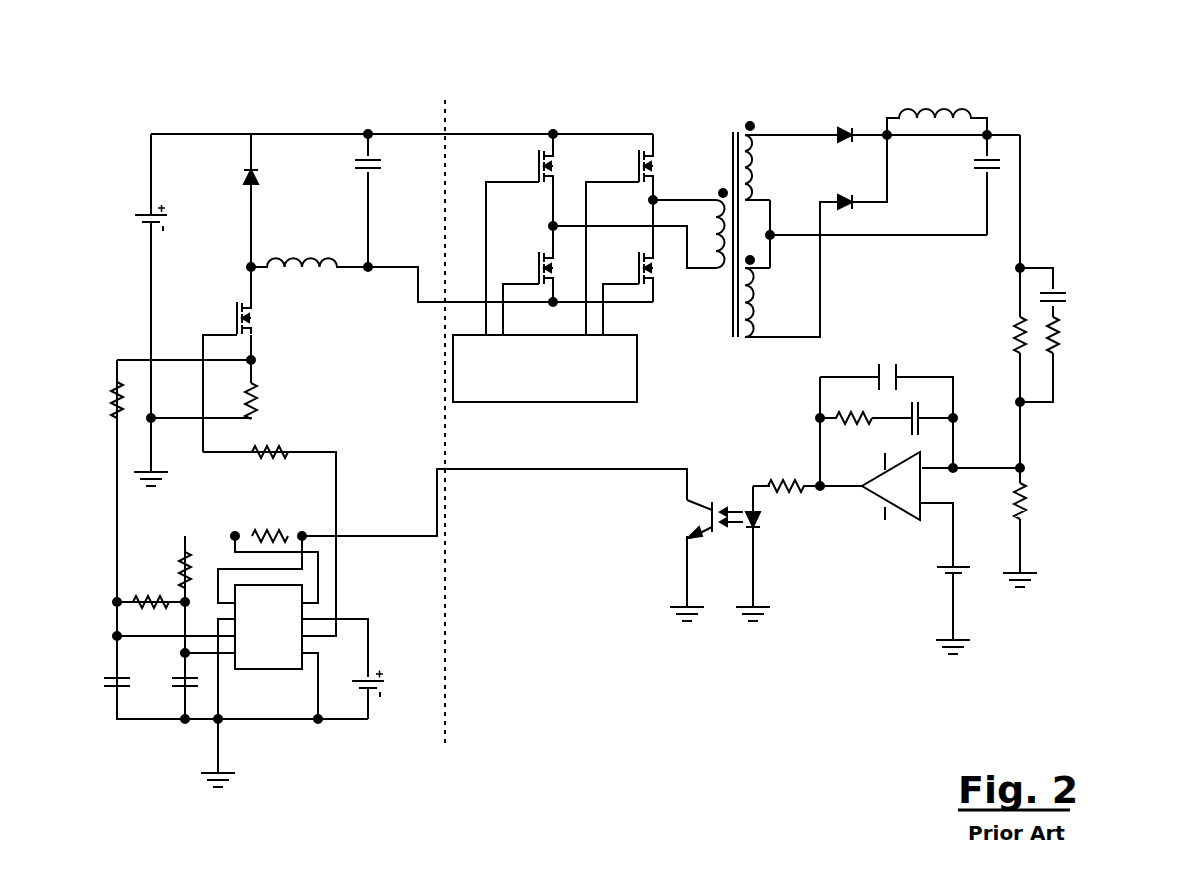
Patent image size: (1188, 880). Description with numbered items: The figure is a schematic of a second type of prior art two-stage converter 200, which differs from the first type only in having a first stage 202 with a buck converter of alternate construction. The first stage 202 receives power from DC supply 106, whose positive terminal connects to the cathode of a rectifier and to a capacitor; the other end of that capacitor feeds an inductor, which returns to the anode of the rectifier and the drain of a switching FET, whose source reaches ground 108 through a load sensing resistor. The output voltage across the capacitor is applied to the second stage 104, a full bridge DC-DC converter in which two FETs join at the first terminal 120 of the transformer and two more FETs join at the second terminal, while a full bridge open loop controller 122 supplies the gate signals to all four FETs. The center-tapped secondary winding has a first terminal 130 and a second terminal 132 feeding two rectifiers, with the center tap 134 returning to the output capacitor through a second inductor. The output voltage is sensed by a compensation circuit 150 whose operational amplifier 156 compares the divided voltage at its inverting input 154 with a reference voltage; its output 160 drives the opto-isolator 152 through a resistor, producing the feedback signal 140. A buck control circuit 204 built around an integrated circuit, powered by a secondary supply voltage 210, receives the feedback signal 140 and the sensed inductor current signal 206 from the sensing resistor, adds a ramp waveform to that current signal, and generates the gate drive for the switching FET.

The second stage 104 is at (681, 95).
The DC supply 106 is at (147, 213).
The ground 108 is at (153, 452).
The first terminal of transformer 120 is at (705, 270).
The full bridge open loop controller 122 is at (545, 402).
The first terminal of secondary winding 130 is at (772, 132).
The second terminal of secondary winding 132 is at (768, 333).
The center tap 134 is at (785, 228).
The feedback signal 140 is at (487, 469).
The compensation circuit 150 is at (1084, 439).
The opto-isolator 152 is at (720, 472).
The inverting input 154 is at (925, 470).
The operational amplifier 156 is at (957, 503).
The output of operational amplifier 160 is at (843, 487).
The two-stage converter 200 is at (602, 762).
The first stage 202 is at (123, 95).
The buck control circuit 204 is at (152, 754).
The sensed inductor current signal 206 is at (117, 360).
The secondary supply voltage 210 is at (358, 619).